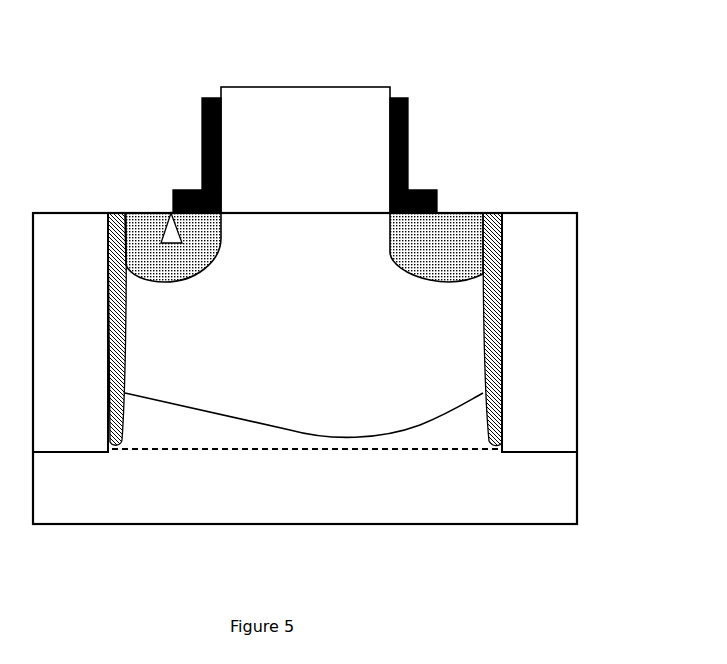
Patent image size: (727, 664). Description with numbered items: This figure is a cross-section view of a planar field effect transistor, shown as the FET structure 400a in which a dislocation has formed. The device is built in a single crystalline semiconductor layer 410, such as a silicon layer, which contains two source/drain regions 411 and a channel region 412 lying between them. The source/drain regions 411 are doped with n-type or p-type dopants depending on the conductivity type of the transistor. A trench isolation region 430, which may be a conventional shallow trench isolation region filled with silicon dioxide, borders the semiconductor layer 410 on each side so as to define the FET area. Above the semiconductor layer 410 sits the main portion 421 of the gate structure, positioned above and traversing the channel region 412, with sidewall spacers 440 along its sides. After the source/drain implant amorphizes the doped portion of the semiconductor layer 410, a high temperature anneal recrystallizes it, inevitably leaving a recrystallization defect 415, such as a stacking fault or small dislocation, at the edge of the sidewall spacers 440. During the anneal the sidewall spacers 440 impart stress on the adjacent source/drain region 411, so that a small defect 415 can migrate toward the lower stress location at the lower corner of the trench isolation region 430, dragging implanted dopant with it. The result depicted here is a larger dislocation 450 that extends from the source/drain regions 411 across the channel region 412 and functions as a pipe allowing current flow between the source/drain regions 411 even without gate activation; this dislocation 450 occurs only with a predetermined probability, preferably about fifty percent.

The FET structure 400a is at (139, 47).
The single crystalline semiconductor layer 410 is at (342, 449).
The source/drain regions 411 is at (140, 213).
The channel region 412 is at (285, 261).
The recrystallization defect 415 is at (182, 232).
The main portion of the gate structure 421 is at (281, 161).
The trench isolation region 430 is at (59, 332).
The sidewall spacers 440 is at (403, 98).
The dislocation 450 is at (236, 407).